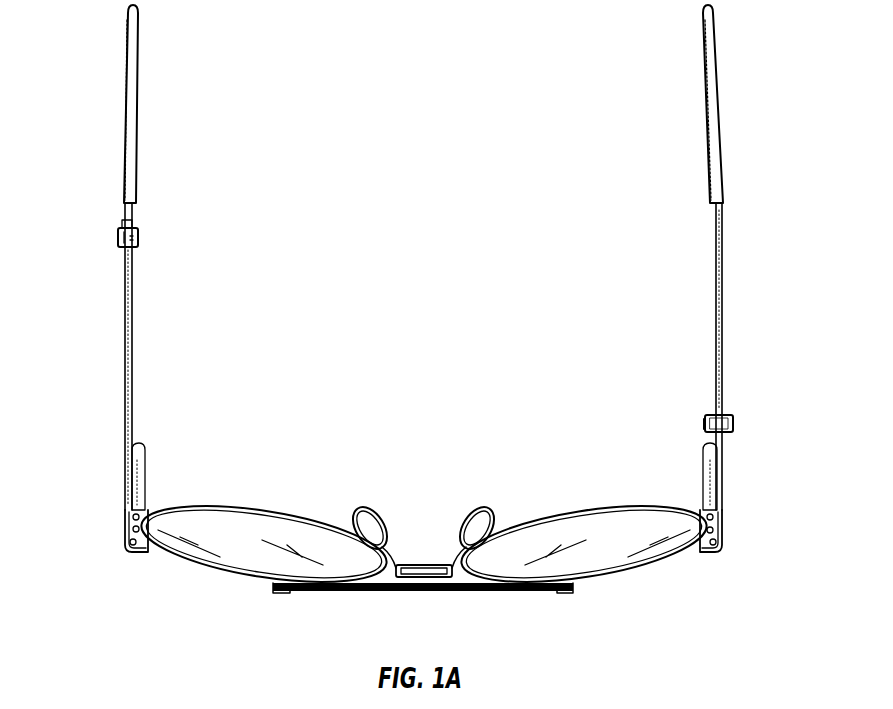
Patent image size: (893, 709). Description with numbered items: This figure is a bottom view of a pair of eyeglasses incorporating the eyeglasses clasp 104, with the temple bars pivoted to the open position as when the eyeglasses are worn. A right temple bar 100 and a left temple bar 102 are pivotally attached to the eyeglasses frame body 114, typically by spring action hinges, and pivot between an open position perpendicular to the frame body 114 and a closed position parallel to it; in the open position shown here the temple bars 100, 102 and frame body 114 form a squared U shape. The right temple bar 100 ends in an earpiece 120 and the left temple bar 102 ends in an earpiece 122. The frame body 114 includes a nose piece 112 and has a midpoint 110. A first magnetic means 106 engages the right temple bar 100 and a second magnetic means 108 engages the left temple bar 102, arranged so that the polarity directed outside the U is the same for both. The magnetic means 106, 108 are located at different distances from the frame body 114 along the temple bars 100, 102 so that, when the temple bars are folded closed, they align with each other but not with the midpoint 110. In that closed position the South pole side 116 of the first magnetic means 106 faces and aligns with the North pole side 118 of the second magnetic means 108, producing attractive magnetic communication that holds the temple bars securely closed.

The right temple bar 100 is at (722, 333).
The left temple bar 102 is at (125, 342).
The eyeglasses clasp 104 is at (441, 412).
The first magnetic means 106 is at (736, 427).
The second magnetic means 108 is at (139, 239).
The midpoint 110 is at (429, 548).
The nose piece 112 is at (428, 591).
The eyeglasses frame body 114 is at (270, 512).
The South pole side 116 is at (705, 424).
The North pole side 118 is at (115, 233).
The earpiece 120 is at (719, 90).
The earpiece 122 is at (133, 92).